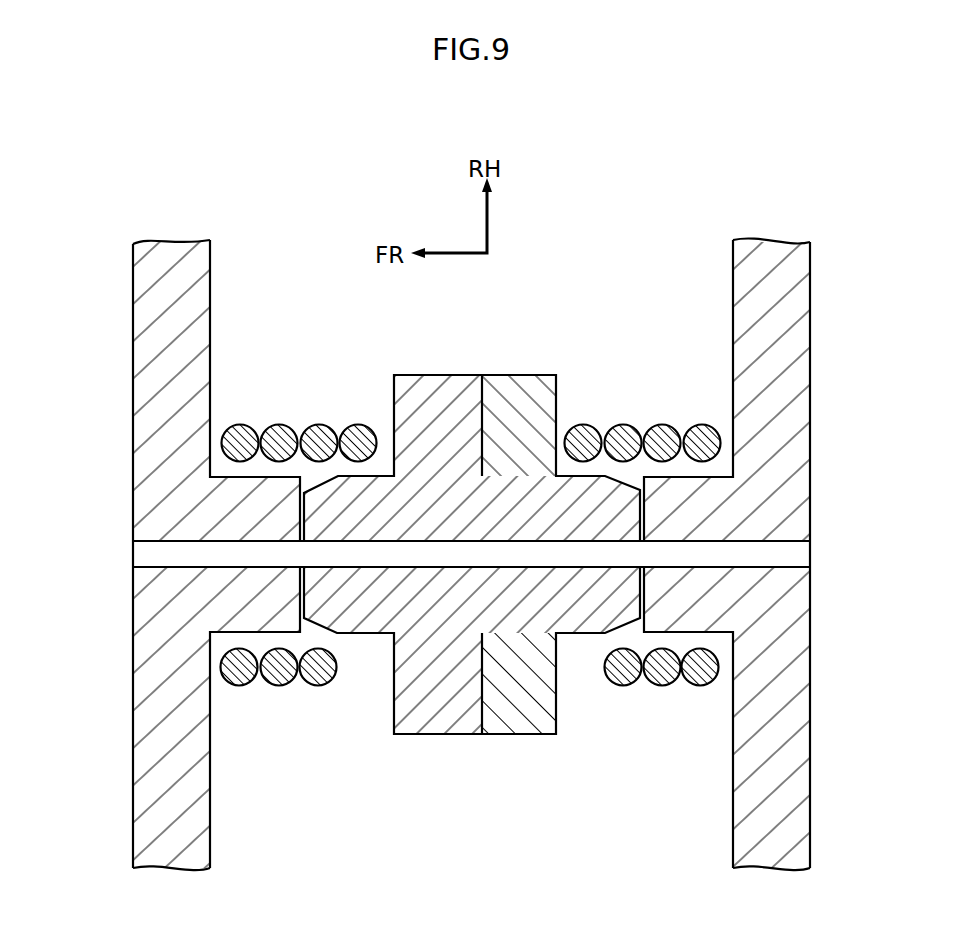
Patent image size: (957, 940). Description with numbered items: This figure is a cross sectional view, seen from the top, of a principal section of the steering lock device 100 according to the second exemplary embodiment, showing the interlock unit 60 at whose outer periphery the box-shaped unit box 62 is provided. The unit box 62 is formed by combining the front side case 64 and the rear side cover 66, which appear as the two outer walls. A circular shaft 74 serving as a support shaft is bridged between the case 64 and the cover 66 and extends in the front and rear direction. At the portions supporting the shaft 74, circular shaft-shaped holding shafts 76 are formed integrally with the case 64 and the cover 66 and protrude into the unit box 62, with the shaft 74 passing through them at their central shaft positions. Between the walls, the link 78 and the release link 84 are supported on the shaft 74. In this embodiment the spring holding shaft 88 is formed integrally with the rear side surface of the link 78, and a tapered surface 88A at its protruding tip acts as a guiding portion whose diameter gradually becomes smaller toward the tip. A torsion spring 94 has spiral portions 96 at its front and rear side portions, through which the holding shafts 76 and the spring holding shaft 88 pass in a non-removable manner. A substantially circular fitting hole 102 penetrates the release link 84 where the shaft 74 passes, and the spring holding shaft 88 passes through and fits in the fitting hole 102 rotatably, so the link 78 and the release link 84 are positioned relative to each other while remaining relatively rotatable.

The interlock unit 60 is at (472, 503).
The steering lock device 100 is at (266, 210).
The unit box 62 is at (472, 554).
The case 64 is at (133, 300).
The cover 66 is at (810, 320).
The shaft 74 is at (792, 553).
The holding shaft 76 is at (471, 421).
The link 78 is at (432, 366).
The release link 84 is at (521, 366).
The spring holding shaft 88 is at (470, 688).
The tapered surface 88A is at (622, 650).
The torsion spring 94 is at (280, 426).
The spiral portion 96 is at (471, 414).
The fitting hole 102 is at (516, 626).